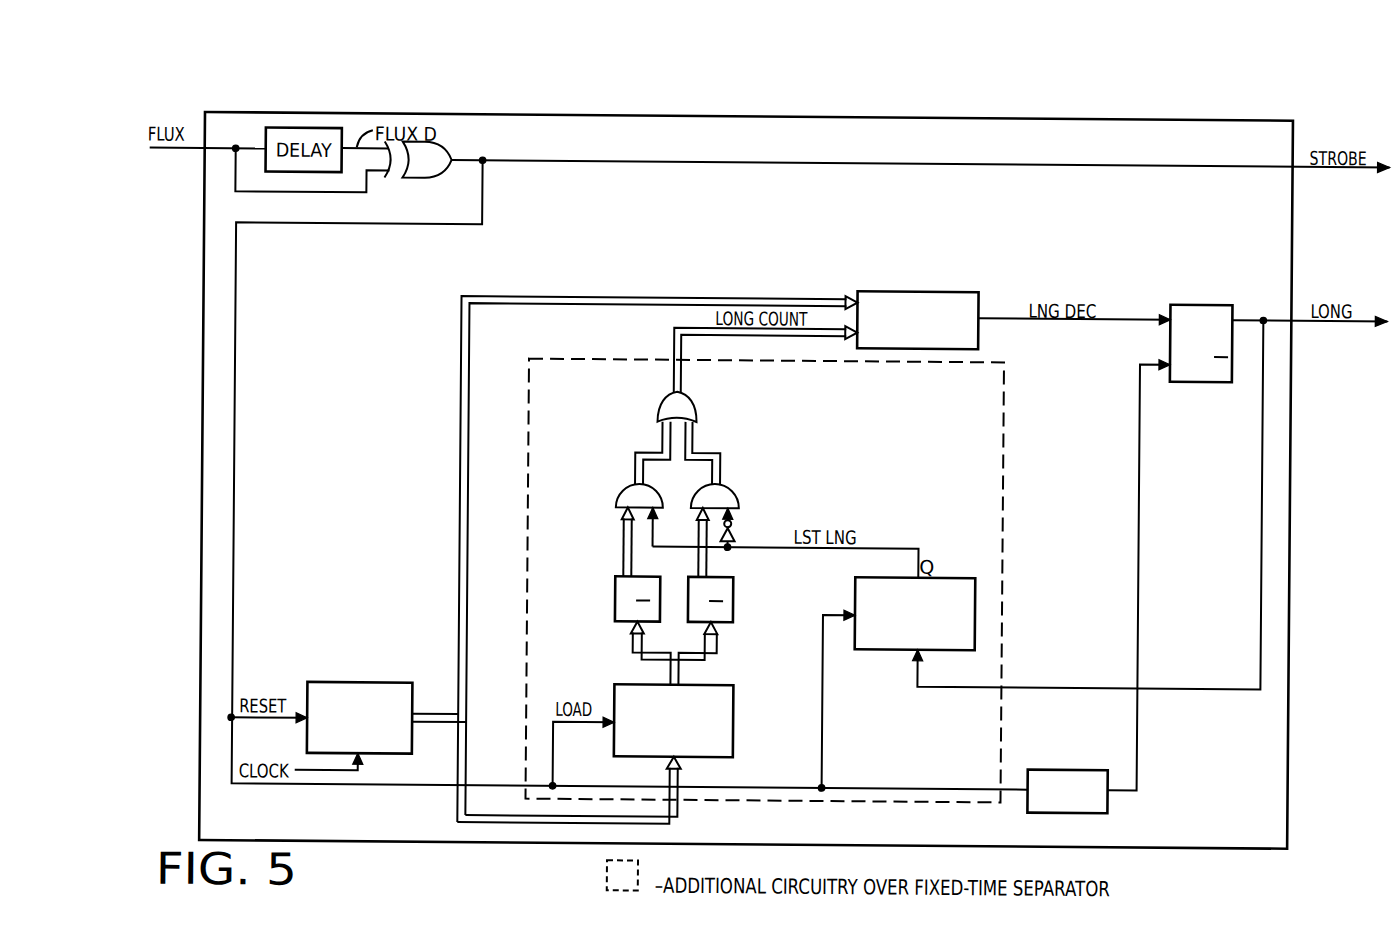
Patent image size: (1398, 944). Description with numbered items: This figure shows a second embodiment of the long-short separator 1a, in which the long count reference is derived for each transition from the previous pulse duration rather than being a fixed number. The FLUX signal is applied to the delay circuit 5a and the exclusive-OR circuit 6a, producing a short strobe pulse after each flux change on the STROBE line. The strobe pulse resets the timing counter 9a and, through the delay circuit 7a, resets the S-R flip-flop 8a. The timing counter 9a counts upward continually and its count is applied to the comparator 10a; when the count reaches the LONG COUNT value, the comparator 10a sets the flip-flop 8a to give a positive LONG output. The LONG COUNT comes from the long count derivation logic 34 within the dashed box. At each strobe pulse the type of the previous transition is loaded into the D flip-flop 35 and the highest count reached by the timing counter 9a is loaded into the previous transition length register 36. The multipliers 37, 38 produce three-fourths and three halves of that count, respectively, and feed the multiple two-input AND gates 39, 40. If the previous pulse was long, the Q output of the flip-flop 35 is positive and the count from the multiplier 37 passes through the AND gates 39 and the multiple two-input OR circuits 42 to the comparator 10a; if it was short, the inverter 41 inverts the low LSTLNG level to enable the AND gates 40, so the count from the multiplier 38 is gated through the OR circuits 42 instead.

The long-short separator 1a is at (352, 447).
The delay circuit 5a is at (266, 127).
The exclusive-OR circuit 6a is at (453, 157).
The delay circuit 7a is at (1053, 763).
The S-R flip-flop 8a is at (1190, 297).
The timing counter 9a is at (374, 681).
The comparator 10a is at (900, 287).
The long count derivation logic 34 is at (883, 469).
The D flip-flop 35 is at (899, 645).
The previous transition length register 36 is at (738, 720).
The multiplier 37 is at (619, 588).
The multiplier 38 is at (737, 593).
The multiple two-input AND gates 39 is at (624, 489).
The multiple two-input AND gates 40 is at (735, 487).
The inverter 41 is at (738, 534).
The multiple two-input OR circuits 42 is at (700, 403).